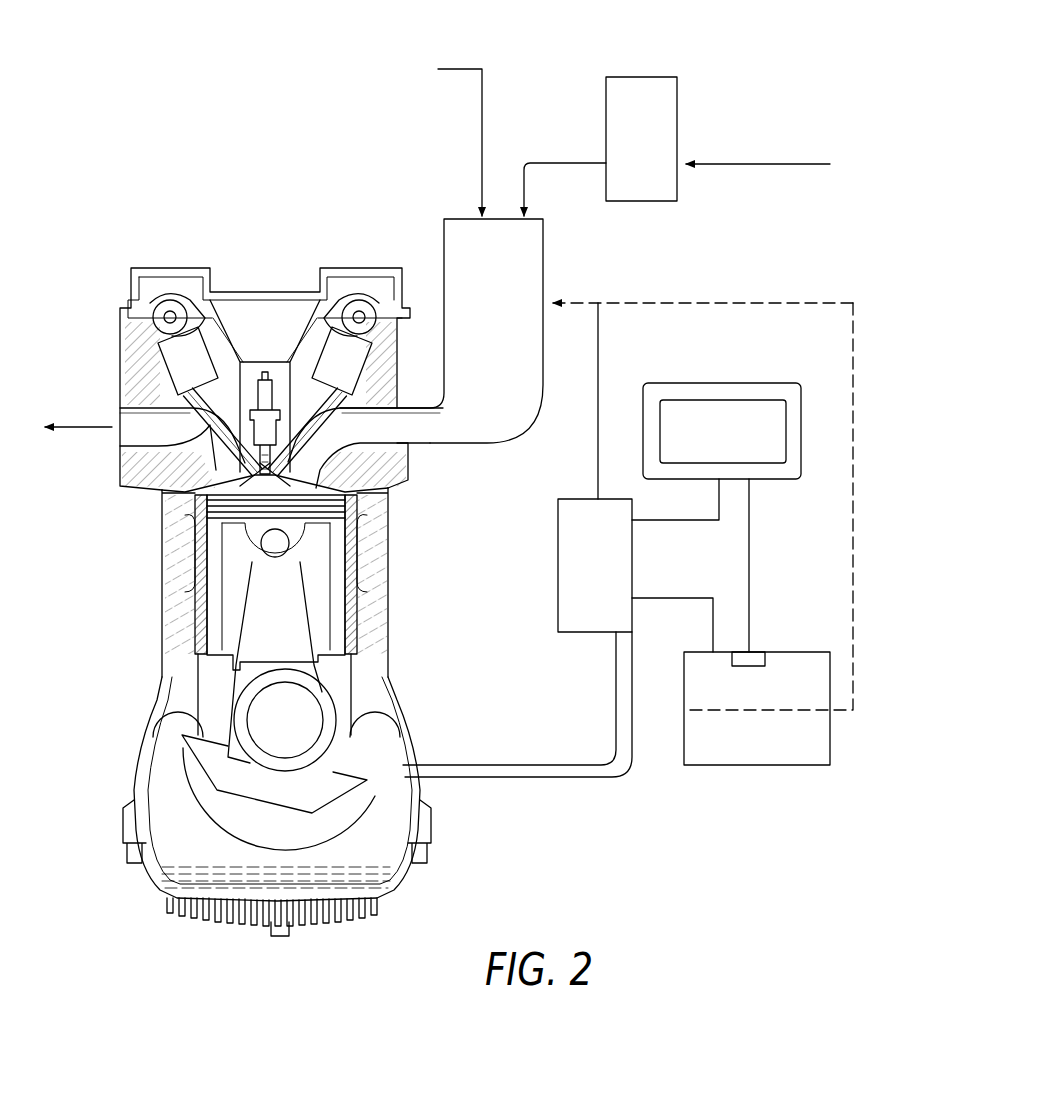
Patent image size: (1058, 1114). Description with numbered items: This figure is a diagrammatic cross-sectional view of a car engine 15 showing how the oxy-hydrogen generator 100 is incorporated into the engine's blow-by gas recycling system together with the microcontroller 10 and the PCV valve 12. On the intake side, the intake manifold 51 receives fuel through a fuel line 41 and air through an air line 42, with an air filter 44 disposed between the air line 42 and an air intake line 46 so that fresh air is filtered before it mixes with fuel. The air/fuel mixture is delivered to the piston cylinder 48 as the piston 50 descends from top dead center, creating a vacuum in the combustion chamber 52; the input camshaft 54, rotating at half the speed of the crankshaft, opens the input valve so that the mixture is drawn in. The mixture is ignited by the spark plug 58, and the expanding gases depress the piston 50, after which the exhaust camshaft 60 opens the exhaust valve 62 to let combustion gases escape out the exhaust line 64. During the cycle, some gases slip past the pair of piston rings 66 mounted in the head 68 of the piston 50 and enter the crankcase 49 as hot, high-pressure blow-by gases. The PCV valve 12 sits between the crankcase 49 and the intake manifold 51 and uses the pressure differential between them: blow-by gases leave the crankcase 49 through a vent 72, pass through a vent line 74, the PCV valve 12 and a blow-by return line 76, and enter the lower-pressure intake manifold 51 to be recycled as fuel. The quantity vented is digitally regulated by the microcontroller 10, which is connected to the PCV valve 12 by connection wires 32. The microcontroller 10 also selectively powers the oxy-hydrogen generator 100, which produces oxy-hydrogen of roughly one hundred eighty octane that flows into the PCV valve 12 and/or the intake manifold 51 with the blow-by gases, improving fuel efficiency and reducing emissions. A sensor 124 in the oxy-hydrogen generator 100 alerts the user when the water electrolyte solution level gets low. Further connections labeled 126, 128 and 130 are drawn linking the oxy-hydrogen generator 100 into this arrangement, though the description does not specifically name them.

The engine 15 is at (205, 120).
The microcontroller 10 is at (735, 383).
The PCV valve 12 is at (562, 497).
The connection wires 32 is at (668, 520).
The fuel line 41 is at (482, 158).
The air line 42 is at (560, 163).
The air filter 44 is at (636, 77).
The air intake line 46 is at (760, 166).
The piston cylinder 48 is at (200, 569).
The crankcase 49 is at (285, 720).
The piston 50 is at (200, 595).
The intake manifold 51 is at (543, 285).
The combustion chamber 52 is at (165, 493).
The input camshaft 54 is at (377, 302).
The spark plug 58 is at (265, 370).
The exhaust camshaft 60 is at (152, 302).
The exhaust valve 62 is at (203, 420).
The exhaust line 64 is at (88, 425).
The piston rings 66 is at (357, 486).
The head of the piston 68 is at (330, 505).
The vent 72 is at (415, 760).
The vent line 74 is at (616, 716).
The blow-by return line 76 is at (598, 355).
The oxy-hydrogen generator 100 is at (756, 765).
The sensor 124 is at (758, 652).
The hydrogen supply line 126 is at (703, 598).
The hydrogen delivery line 128 is at (853, 508).
The line junction 130 is at (655, 712).